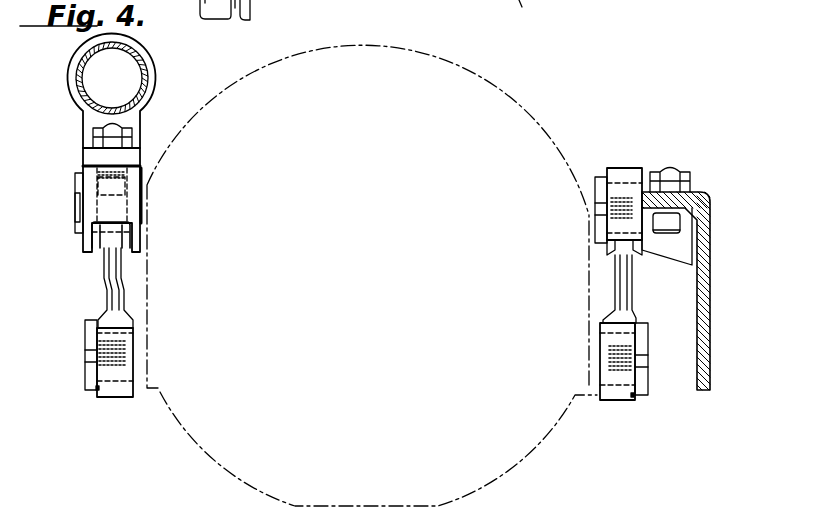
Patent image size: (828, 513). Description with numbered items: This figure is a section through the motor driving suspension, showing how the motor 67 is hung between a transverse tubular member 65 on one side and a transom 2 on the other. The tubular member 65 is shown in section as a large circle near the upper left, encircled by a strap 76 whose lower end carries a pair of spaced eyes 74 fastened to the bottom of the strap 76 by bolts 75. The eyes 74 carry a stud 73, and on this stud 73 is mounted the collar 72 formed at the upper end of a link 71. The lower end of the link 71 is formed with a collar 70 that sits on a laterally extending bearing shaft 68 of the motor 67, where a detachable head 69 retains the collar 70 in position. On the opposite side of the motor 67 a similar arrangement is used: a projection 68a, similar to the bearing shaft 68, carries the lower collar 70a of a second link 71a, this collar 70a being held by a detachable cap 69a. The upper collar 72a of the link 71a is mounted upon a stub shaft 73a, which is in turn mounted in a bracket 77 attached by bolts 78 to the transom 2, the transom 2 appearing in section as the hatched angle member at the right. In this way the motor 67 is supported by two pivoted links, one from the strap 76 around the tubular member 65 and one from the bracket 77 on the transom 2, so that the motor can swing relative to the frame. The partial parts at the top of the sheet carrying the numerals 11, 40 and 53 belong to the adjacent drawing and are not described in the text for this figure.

The transom 2 is at (707, 218).
The partial element 11 is at (536, 9).
The partial element 40 is at (248, 6).
The partial element 53 is at (231, 14).
The transverse tubular member 65 is at (128, 66).
The motor 67 is at (497, 454).
The bearing shaft 68 is at (95, 390).
The projection 68a is at (632, 396).
The detachable head 69 is at (88, 340).
The detachable cap 69a is at (648, 338).
The collar 70 is at (117, 390).
The lower collar 70a is at (610, 398).
The link 71 is at (112, 278).
The link 71a is at (622, 290).
The collar 72 is at (97, 228).
The upper collar 72a is at (628, 170).
The stud 73 is at (143, 178).
The stub shaft 73a is at (606, 182).
The spaced eyes 74 is at (88, 193).
The bolt 75 is at (110, 137).
The strap 76 is at (157, 88).
The bracket 77 is at (670, 243).
The bolt 78 is at (673, 171).